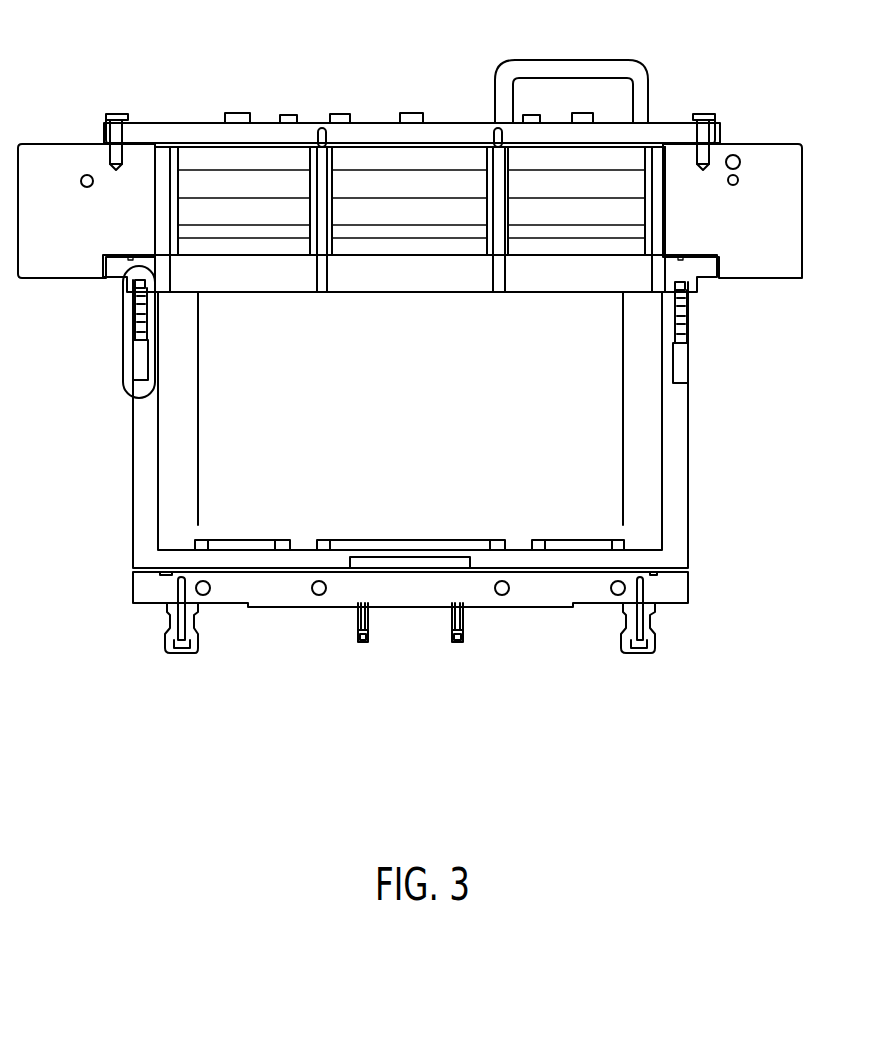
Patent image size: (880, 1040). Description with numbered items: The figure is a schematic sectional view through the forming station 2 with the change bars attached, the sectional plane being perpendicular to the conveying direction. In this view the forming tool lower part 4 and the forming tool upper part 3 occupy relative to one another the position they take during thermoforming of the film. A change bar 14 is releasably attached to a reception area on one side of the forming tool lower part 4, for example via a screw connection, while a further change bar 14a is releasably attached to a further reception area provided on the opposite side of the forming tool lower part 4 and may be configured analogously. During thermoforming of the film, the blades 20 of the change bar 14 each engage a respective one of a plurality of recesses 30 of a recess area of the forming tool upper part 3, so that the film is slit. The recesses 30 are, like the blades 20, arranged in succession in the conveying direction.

The forming station 2 is at (73, 73).
The forming tool upper part 3 is at (756, 136).
The forming tool lower part 4 is at (717, 395).
The change bar 14 is at (114, 389).
The further change bar 14a is at (697, 353).
The blades 20 is at (122, 298).
The recesses 30 is at (128, 284).